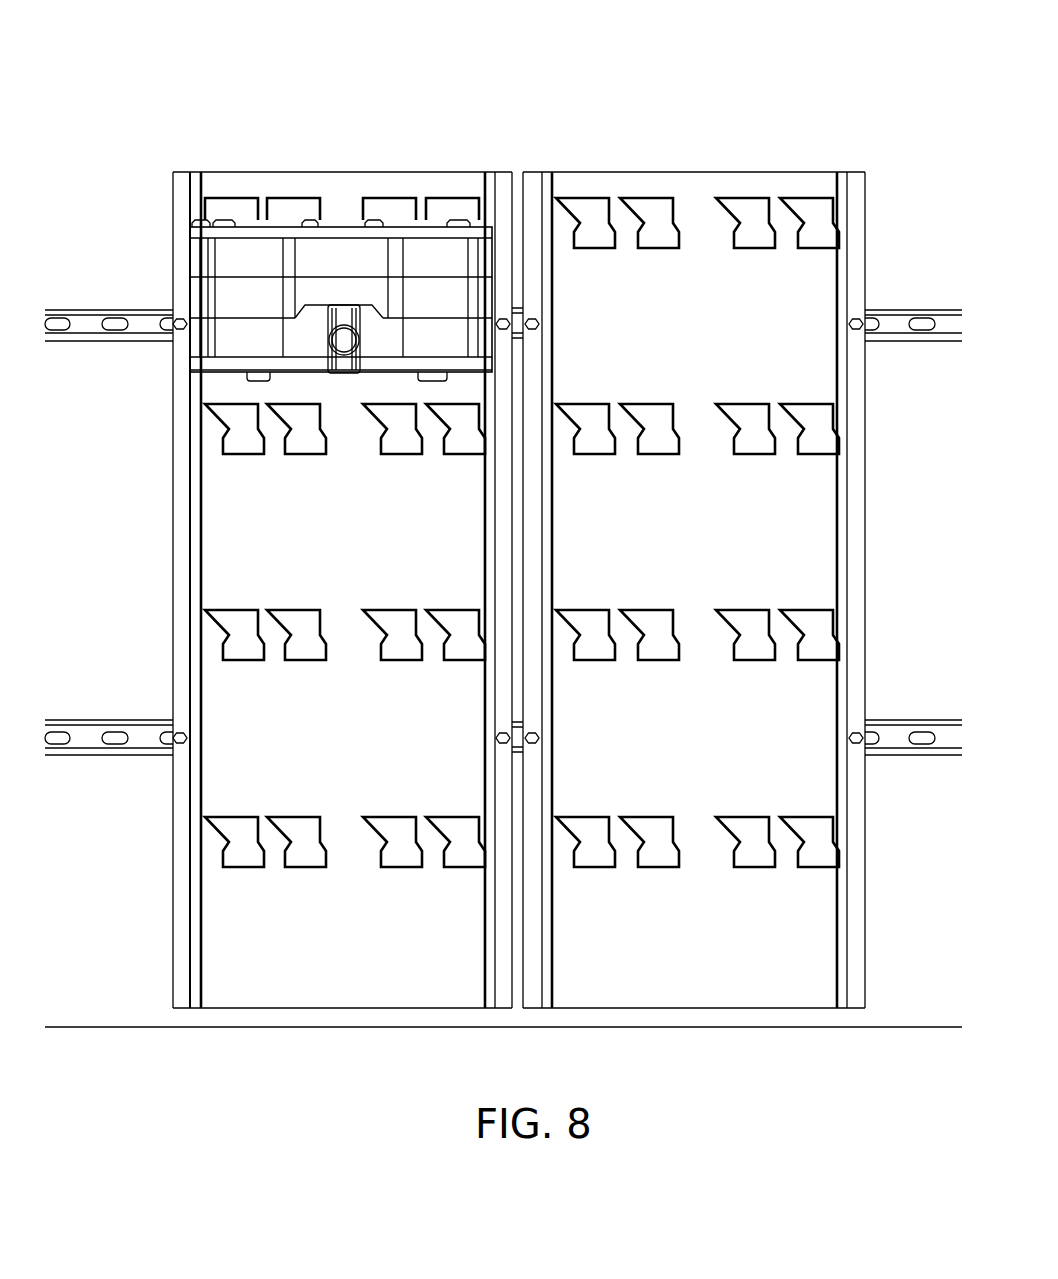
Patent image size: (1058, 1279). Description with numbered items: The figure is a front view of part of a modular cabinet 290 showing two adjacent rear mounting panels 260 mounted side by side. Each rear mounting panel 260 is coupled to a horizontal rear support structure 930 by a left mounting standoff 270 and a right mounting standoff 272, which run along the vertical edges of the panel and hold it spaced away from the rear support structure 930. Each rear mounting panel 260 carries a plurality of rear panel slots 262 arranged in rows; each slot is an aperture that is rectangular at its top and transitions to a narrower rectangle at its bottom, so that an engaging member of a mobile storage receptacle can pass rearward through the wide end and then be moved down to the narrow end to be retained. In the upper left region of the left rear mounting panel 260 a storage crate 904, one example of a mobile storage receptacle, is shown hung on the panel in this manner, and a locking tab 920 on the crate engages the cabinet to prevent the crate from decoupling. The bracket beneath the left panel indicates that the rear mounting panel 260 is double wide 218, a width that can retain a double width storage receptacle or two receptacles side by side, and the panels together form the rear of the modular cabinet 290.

The modular cabinet 290 is at (860, 117).
The rear mounting panel 260 is at (253, 932).
The left mounting standoff 270 is at (178, 190).
The right mounting standoff 272 is at (508, 188).
The rear support structure 930 is at (897, 322).
The rear panel slots 262 is at (742, 455).
The storage crate 904 is at (318, 275).
The locking tab 920 is at (347, 375).
The double wide 218 is at (483, 1050).